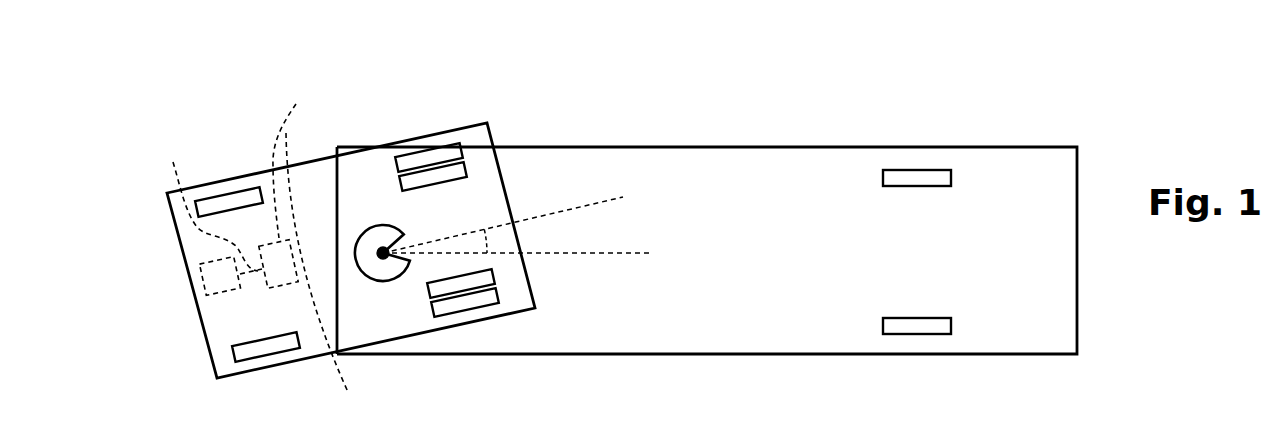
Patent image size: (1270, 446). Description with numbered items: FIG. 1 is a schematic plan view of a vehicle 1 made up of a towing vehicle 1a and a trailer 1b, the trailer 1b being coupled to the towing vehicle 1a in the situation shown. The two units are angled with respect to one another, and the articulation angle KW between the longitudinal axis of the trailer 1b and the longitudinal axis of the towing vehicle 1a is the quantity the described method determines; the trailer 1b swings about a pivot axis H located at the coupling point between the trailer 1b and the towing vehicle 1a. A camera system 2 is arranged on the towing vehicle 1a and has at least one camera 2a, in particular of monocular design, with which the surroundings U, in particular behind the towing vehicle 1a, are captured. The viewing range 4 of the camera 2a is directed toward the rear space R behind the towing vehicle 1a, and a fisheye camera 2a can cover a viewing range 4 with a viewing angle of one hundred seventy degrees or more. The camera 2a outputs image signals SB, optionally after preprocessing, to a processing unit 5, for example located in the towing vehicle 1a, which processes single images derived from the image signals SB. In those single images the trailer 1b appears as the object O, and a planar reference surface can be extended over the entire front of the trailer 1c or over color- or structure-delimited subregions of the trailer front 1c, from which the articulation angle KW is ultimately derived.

The vehicle 1 is at (1123, 130).
The towing vehicle 1a is at (207, 343).
The trailer 1b is at (825, 147).
The front of the trailer 1c is at (336, 175).
The camera system 2 is at (258, 247).
The camera 2a is at (303, 153).
The viewing range 4 is at (343, 375).
The processing unit 5 is at (198, 280).
The image signals SB is at (199, 200).
The pivot axis H is at (383, 245).
The articulation angle KW is at (489, 237).
The object O is at (612, 145).
The surroundings U is at (98, 158).
The rear space R is at (327, 256).